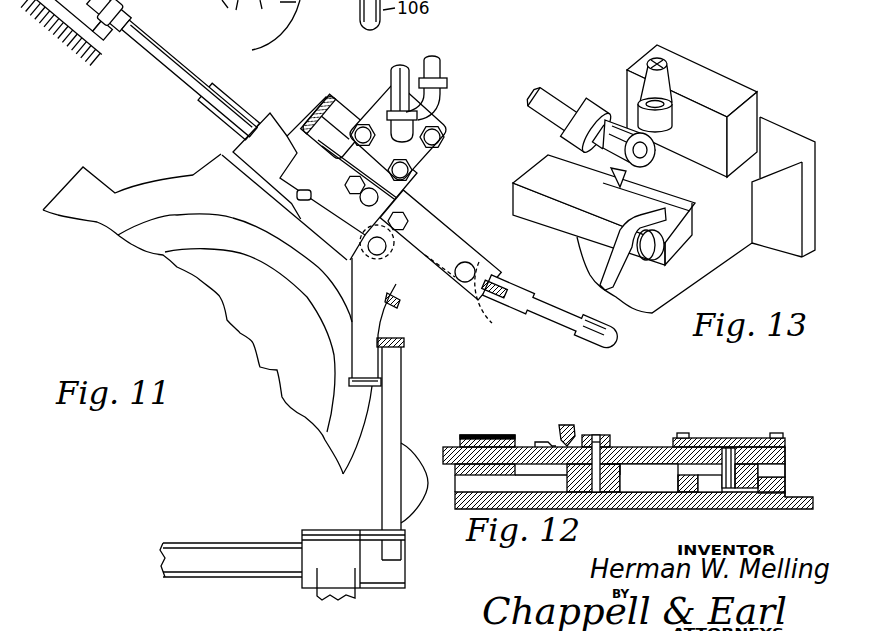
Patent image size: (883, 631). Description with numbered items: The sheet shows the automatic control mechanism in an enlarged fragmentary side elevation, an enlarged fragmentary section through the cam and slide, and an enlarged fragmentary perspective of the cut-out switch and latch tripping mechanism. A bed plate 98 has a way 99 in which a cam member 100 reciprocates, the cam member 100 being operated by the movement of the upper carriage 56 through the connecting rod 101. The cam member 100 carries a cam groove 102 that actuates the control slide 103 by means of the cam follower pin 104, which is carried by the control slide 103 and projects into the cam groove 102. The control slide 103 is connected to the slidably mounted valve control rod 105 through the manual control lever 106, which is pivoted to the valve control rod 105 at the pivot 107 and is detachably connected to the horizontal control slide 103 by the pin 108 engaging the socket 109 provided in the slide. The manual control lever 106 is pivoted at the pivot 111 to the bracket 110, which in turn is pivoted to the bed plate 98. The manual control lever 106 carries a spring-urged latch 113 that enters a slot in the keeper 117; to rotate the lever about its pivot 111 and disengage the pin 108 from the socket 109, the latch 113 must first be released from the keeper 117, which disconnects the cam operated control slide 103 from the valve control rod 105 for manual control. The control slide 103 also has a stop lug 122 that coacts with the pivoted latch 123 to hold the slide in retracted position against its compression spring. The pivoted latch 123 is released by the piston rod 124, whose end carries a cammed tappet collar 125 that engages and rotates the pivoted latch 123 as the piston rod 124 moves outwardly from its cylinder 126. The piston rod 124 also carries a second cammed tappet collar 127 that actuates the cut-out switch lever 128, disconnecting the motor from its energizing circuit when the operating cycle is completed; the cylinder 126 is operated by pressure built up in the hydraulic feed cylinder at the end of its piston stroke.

In FIG. 11, the upper carriage 56 is at (64, 28).
In FIG. 11, the bed plate 98 is at (280, 168).
In FIG. 12, the bed plate 98 is at (803, 498).
In FIG. 12, the way 99 is at (770, 485).
In FIG. 11, the cam member 100 is at (208, 106).
In FIG. 12, the cam member 100 is at (762, 488).
In FIG. 11, the connecting rod 101 is at (157, 56).
In FIG. 12, the cam groove 102 is at (702, 487).
In FIG. 12, the control slide 103 is at (652, 450).
In FIG. 12, the cam follower pin 104 is at (730, 450).
In FIG. 11, the valve control rod 105 is at (356, 266).
In FIG. 12, the valve control rod 105 is at (455, 480).
In FIG. 11, the manual control lever 106 is at (551, 318).
In FIG. 12, the manual control lever 106 is at (603, 444).
In FIG. 12, the pivot 107 is at (600, 490).
In FIG. 12, the pin 108 is at (598, 445).
In FIG. 12, the socket 109 is at (612, 462).
In FIG. 11, the bracket 110 is at (442, 282).
In FIG. 12, the bracket 110 is at (618, 470).
In FIG. 11, the pivot 111 is at (465, 283).
In FIG. 11, the latch 113 is at (508, 285).
In FIG. 11, the keeper 117 is at (497, 306).
In FIG. 12, the stop lug 122 is at (552, 442).
In FIG. 13, the pivoted latch 123 is at (629, 268).
In FIG. 12, the pivoted latch 123 is at (566, 425).
In FIG. 13, the piston rod 124 is at (559, 105).
In FIG. 13, the cammed tappet collar 125 is at (622, 172).
In FIG. 11, the cylinder 126 is at (432, 158).
In FIG. 13, the cammed tappet collar 127 is at (617, 112).
In FIG. 11, the cut-out switch lever 128 is at (360, 100).
In FIG. 13, the cut-out switch lever 128 is at (666, 85).